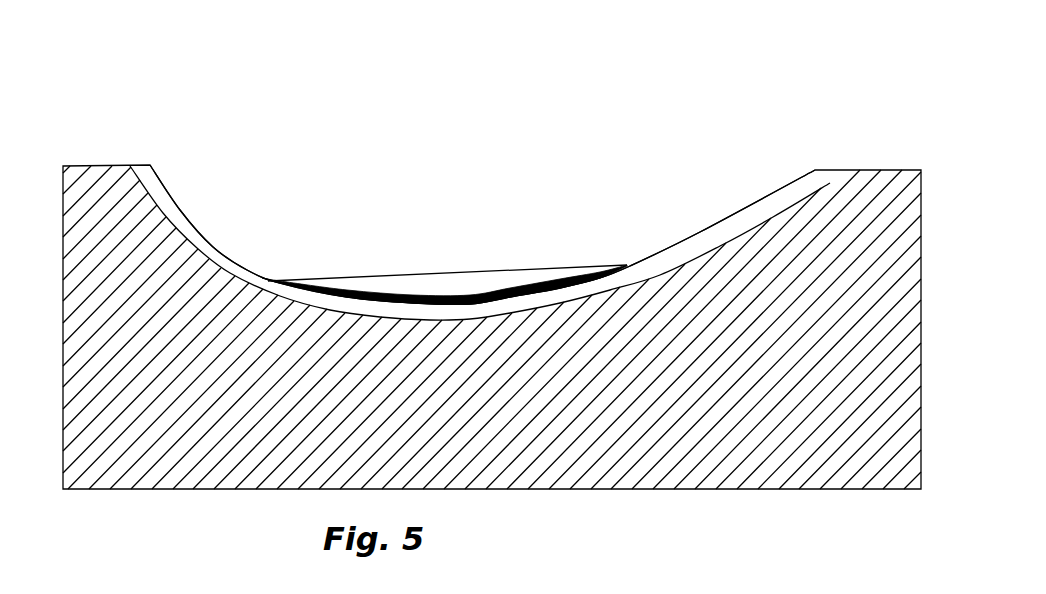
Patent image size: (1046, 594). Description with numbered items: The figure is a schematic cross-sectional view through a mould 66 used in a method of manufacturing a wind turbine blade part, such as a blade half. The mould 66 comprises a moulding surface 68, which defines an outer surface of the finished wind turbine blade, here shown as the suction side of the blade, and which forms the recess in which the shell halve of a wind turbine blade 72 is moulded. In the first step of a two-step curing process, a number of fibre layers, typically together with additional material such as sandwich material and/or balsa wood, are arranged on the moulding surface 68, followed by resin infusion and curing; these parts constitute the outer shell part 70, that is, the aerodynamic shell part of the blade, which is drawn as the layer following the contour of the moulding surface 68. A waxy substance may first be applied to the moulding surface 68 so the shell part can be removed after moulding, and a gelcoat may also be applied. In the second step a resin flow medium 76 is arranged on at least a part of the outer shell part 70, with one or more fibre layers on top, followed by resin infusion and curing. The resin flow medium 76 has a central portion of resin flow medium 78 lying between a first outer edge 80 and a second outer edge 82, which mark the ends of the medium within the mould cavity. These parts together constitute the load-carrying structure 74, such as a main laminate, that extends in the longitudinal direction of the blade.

The mould 66 is at (257, 455).
The moulding surface 68 is at (662, 277).
The outer shell part 70 is at (698, 248).
The shell halve of a wind turbine blade 72 is at (522, 187).
The load-carrying structure 74 is at (397, 291).
The resin flow medium 76 is at (553, 275).
The central portion of resin flow medium 78 is at (453, 296).
The first outer edge 80 is at (622, 266).
The second outer edge 82 is at (292, 279).